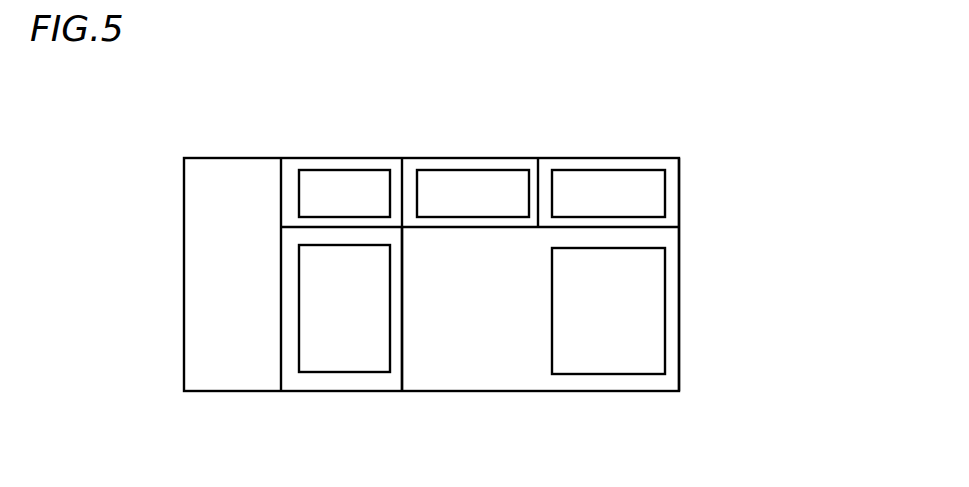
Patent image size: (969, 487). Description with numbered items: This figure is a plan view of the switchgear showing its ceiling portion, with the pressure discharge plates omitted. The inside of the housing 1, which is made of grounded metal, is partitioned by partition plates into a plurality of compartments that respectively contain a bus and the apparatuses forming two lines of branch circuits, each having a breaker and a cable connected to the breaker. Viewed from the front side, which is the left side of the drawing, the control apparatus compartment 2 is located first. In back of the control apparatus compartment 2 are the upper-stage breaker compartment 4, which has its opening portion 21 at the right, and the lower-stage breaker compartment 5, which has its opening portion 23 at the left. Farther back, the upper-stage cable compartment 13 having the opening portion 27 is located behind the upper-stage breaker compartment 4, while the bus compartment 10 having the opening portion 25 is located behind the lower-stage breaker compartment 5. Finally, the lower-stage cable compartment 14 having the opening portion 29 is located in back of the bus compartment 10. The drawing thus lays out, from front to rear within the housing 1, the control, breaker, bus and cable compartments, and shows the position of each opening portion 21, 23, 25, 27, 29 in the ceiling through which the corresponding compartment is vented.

The housing 1 is at (184, 205).
The control apparatus compartment 2 is at (230, 170).
The upper-stage breaker compartment 4 is at (302, 382).
The lower-stage breaker compartment 5 is at (288, 168).
The bus compartment 10 is at (520, 167).
The upper-stage cable compartment 13 is at (489, 367).
The lower-stage cable compartment 14 is at (673, 179).
The opening portion 21 is at (353, 372).
The opening portion 23 is at (342, 170).
The opening portion 25 is at (457, 170).
The opening portion 27 is at (600, 374).
The opening portion 29 is at (605, 170).